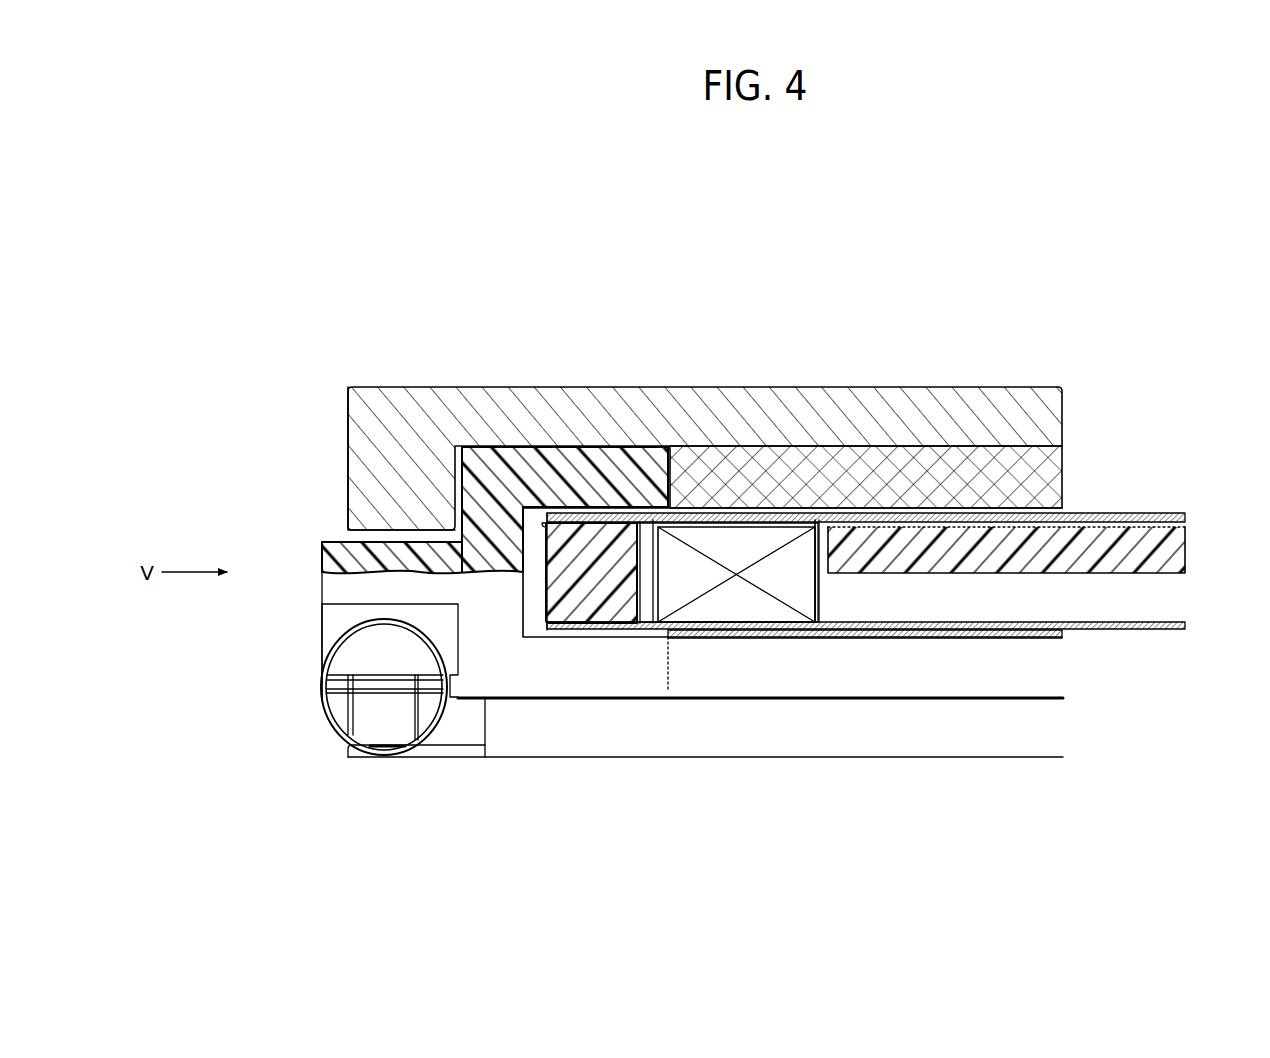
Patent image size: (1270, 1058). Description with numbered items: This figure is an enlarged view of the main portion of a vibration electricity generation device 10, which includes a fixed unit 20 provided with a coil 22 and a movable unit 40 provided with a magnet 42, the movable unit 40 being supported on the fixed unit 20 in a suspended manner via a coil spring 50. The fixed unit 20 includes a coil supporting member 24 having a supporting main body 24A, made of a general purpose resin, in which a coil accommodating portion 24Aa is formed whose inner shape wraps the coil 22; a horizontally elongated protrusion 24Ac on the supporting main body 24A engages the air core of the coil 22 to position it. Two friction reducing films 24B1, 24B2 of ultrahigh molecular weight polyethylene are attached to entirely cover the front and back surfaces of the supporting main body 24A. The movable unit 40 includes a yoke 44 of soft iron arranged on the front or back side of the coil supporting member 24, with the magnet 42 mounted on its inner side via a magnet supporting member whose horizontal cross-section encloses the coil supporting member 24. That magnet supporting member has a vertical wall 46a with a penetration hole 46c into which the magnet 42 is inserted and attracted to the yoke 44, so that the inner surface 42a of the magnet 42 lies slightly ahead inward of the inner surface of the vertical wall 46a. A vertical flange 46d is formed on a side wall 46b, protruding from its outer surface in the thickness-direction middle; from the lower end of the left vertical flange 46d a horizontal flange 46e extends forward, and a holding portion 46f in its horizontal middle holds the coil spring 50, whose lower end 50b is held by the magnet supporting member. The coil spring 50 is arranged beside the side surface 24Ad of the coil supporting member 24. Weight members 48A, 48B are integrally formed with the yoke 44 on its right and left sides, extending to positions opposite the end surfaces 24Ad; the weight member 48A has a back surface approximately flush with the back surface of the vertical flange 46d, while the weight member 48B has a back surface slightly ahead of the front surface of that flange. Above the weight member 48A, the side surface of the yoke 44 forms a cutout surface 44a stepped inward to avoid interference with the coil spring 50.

The vibration electricity generation device 10 is at (1037, 211).
The fixed unit 20 is at (1112, 470).
The coil 22 is at (819, 598).
The coil supporting member 24 is at (1090, 631).
The supporting main body 24A is at (588, 585).
The coil accommodating portion 24Aa is at (728, 623).
The protrusion 24Ac is at (922, 545).
The side surface 24Ad is at (540, 572).
The friction reducing film 24B1 is at (1138, 631).
The friction reducing film 24B2 is at (1142, 513).
The movable unit 40 is at (968, 343).
The magnet 42 is at (865, 460).
The inner surface 42a is at (922, 557).
The yoke 44 is at (713, 386).
The cutout surface 44a is at (487, 723).
The vertical wall 46a is at (620, 460).
The side wall 46b is at (457, 513).
The penetration hole 46c is at (675, 465).
The vertical flange 46d is at (347, 535).
The horizontal flange 46e is at (333, 620).
The holding portion 46f is at (333, 704).
The weight member 48A is at (423, 707).
The weight member 48B is at (360, 482).
The coil spring 50 is at (336, 735).
The lower end 50b is at (383, 693).